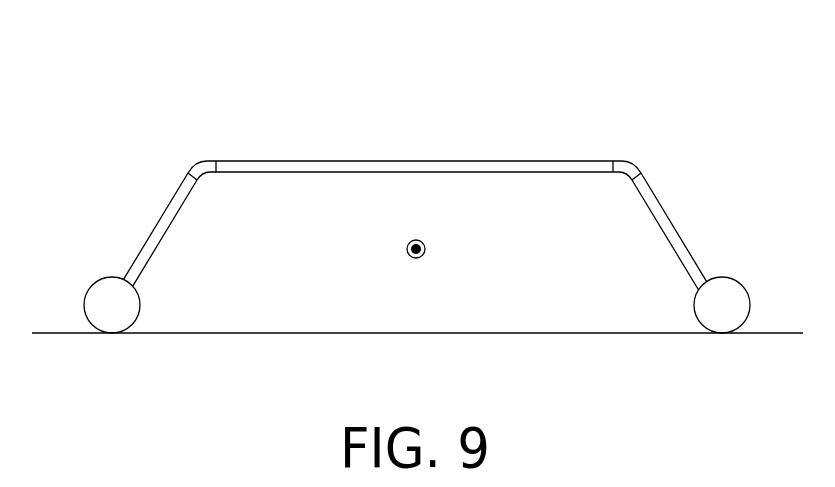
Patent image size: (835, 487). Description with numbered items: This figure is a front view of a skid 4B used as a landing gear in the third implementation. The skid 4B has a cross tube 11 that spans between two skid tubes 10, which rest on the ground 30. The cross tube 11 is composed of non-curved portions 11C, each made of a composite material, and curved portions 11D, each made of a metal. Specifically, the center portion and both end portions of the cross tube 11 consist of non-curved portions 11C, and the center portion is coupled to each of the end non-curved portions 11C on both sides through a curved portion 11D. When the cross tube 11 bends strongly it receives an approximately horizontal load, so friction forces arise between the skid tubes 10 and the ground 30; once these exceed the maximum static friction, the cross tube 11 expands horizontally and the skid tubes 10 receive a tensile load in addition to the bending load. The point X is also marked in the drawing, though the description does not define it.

The skid 4B is at (221, 108).
The cross tube 11 is at (524, 150).
The non-curved portion 11C is at (153, 228).
The curved portion 11D is at (196, 164).
The skid tube 10 is at (137, 308).
The ground 30 is at (555, 333).
The center of gravity point X is at (402, 248).